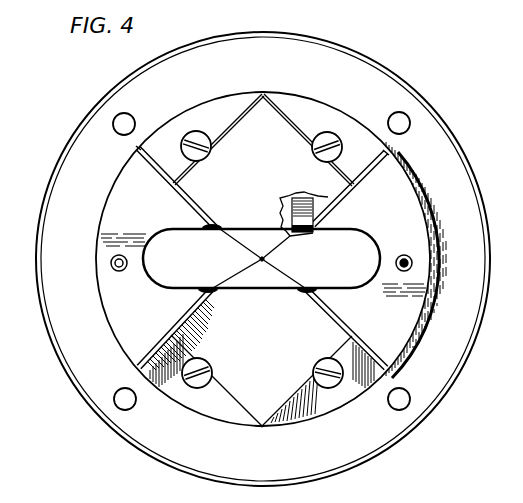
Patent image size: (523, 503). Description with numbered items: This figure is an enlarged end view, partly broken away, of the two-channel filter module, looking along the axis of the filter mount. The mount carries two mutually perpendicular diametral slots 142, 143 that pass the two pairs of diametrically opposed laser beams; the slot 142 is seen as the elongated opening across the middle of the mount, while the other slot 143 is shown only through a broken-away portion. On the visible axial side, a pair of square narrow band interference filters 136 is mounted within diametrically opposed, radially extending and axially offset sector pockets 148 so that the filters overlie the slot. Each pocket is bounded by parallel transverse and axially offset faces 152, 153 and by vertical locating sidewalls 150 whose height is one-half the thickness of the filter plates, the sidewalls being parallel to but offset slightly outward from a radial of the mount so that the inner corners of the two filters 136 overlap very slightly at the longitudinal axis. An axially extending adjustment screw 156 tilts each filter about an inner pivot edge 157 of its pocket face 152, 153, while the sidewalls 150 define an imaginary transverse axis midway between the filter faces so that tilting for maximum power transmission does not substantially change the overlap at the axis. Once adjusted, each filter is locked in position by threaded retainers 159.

The narrow band interference filter 136 is at (279, 155).
The diametral slot 142 is at (359, 232).
The diametral slot 143 is at (281, 199).
The sector pocket 148 is at (350, 136).
The locating sidewall 150 is at (166, 166).
The pocket face 152 is at (296, 108).
The pocket face 153 is at (318, 414).
The adjustment screw 156 is at (119, 271).
The inner pivot edge 157 is at (300, 235).
The threaded retainer 159 is at (193, 131).